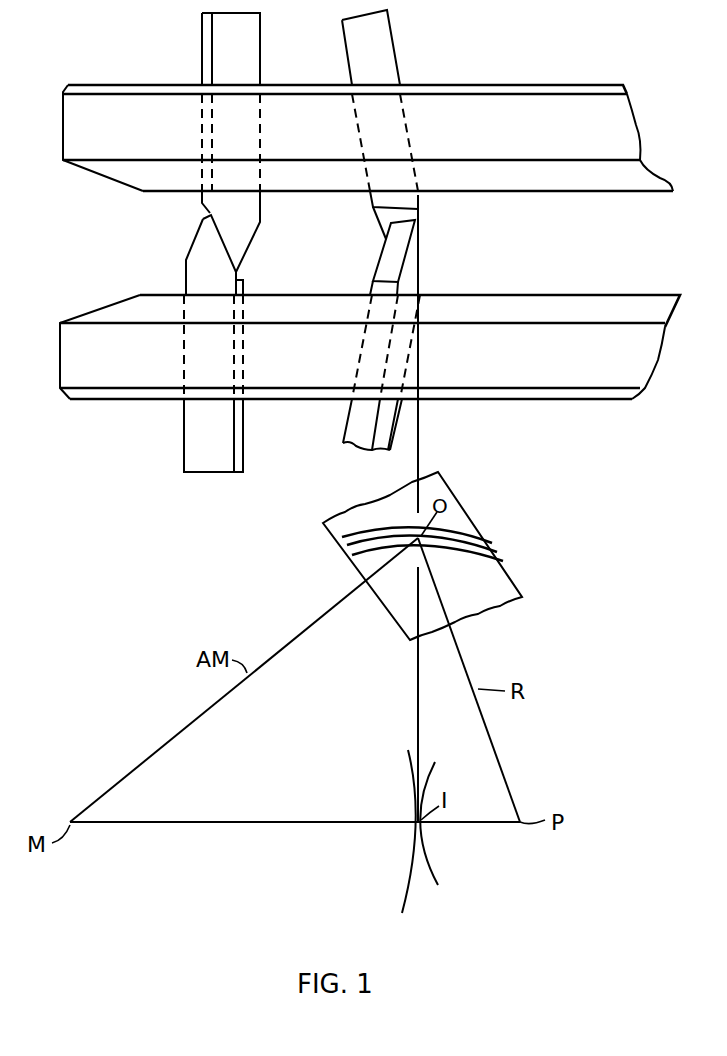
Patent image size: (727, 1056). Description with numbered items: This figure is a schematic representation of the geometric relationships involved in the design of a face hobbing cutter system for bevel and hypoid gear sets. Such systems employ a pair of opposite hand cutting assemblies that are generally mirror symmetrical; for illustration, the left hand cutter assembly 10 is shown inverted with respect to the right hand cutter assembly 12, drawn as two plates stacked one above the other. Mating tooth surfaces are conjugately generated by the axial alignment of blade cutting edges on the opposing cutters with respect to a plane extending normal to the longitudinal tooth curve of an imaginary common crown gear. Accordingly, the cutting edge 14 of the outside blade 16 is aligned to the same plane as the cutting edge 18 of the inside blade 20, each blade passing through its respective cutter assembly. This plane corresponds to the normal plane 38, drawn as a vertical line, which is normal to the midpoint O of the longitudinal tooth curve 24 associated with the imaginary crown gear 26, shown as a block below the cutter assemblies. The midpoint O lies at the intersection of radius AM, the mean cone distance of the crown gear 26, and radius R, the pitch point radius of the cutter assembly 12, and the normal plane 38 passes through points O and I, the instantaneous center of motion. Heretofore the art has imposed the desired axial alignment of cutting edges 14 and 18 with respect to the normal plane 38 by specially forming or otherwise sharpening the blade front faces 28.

The left hand cutter assembly 10 is at (568, 54).
The right hand cutter assembly 12 is at (574, 275).
The cutting edge 14 is at (215, 230).
The outside blade 16 is at (244, 60).
The cutting edge 18 is at (229, 253).
The inside blade 20 is at (220, 449).
The longitudinal tooth curve 24 is at (497, 549).
The imaginary crown gear 26 is at (478, 600).
The blade front face 28 is at (412, 268).
The normal plane 38 is at (421, 428).